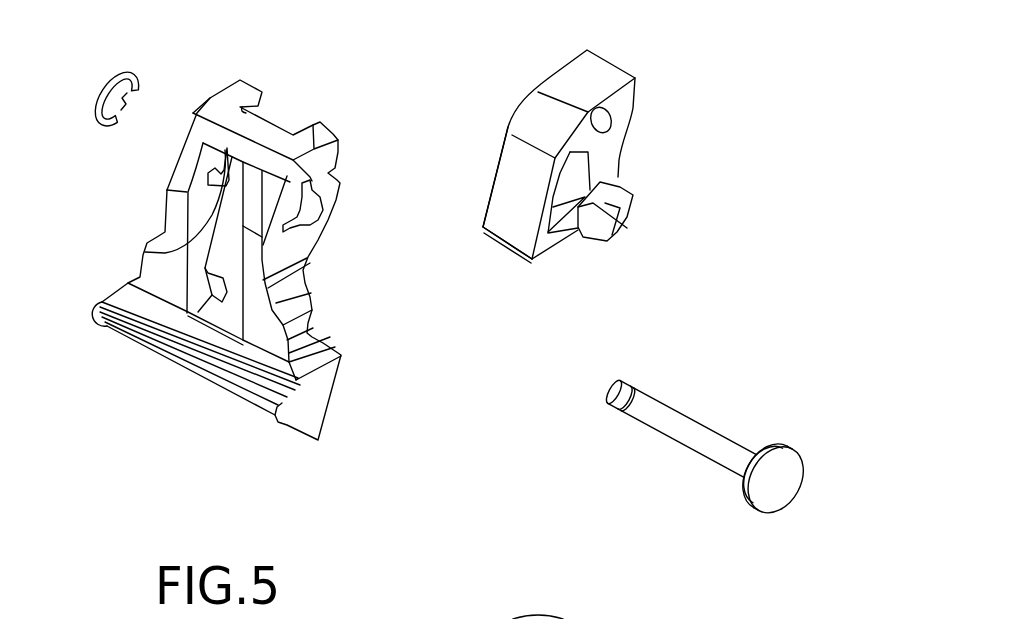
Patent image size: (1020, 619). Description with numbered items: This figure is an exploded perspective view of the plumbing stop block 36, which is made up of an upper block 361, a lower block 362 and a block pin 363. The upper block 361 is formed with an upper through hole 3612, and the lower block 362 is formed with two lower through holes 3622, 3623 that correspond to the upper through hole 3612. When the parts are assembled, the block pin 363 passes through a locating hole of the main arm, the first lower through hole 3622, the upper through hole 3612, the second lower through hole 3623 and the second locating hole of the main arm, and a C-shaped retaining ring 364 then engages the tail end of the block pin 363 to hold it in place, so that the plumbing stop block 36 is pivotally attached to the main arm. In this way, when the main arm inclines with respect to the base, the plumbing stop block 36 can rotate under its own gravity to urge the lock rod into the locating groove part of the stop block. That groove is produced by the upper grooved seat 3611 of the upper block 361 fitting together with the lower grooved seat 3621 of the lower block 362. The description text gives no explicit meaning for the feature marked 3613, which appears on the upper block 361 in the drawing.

The plumbing stop block 36 is at (641, 547).
The upper block 361 is at (667, 170).
The upper grooved seat 3611 is at (510, 250).
The upper through hole 3612 is at (604, 127).
The protruding tab 3613 is at (607, 217).
The lower block 362 is at (289, 266).
The lower grooved seat 3621 is at (203, 343).
The lower through hole 3622 is at (317, 210).
The lower through hole 3623 is at (152, 249).
The block pin 363 is at (677, 410).
The C-shaped retaining ring 364 is at (127, 74).